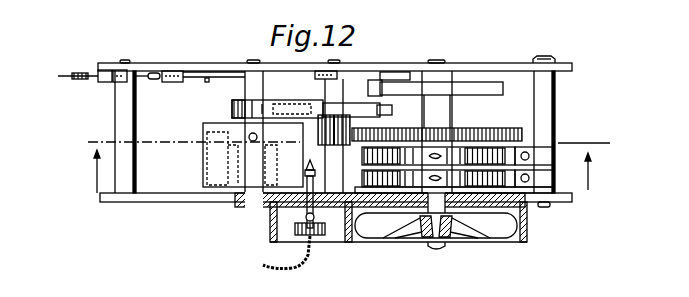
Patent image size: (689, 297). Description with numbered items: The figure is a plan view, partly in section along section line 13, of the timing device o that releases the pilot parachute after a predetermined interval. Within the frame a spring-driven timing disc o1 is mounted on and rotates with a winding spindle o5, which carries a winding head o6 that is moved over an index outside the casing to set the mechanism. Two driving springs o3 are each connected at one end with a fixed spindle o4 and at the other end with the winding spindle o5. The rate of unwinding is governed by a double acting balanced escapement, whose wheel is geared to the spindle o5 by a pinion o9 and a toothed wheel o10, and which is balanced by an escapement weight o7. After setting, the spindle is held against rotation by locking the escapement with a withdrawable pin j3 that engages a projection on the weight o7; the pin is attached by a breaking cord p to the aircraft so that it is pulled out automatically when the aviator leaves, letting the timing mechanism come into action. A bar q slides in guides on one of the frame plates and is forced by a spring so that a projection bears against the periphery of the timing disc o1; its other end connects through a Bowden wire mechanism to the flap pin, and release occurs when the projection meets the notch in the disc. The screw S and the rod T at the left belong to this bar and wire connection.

The timing device o is at (168, 198).
The adjusting screw S is at (88, 80).
The connecting rod T is at (207, 82).
The bar q is at (223, 77).
The pinion o9 is at (350, 122).
The timing disc o1 is at (478, 87).
The winding spindle o5 is at (448, 113).
The toothed wheel o10 is at (413, 129).
The driving springs o3 is at (505, 148).
The fixed spindle o4 is at (543, 97).
The escapement weight o7 is at (202, 163).
The section line 13 is at (347, 158).
The winding head o6 is at (503, 235).
The withdrawable pin j3 is at (262, 200).
The breaking cord p is at (303, 267).